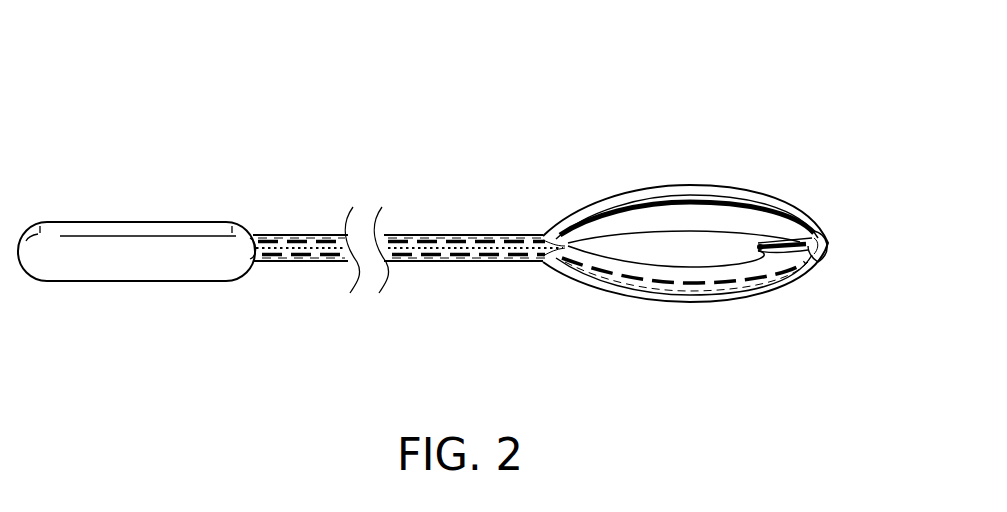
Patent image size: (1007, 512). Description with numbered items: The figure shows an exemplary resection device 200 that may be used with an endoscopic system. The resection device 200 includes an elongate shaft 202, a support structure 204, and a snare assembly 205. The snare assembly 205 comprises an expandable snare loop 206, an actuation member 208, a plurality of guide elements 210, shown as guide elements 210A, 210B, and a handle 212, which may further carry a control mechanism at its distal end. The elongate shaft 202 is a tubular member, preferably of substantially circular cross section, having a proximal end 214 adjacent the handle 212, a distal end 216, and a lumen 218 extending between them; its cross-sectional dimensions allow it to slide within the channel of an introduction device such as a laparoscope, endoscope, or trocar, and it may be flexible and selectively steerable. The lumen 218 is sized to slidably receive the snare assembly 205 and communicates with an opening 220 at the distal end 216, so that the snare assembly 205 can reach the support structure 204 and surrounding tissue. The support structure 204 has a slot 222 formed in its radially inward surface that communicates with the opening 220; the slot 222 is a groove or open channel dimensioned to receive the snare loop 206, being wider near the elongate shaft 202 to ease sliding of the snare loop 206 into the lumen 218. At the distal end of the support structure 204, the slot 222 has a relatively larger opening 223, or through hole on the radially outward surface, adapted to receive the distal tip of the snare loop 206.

The resection device 200 is at (84, 59).
The elongate shaft 202 is at (283, 263).
The support structure 204 is at (690, 303).
The snare assembly 205 is at (518, 139).
The expandable snare loop 206 is at (632, 232).
The actuation member 208 is at (473, 256).
The guide elements 210 is at (781, 262).
The guide element 210A is at (777, 240).
The guide element 210B is at (763, 253).
The handle 212 is at (139, 282).
The proximal end 214 is at (257, 263).
The distal end 216 is at (539, 265).
The lumen 218 is at (494, 237).
The opening 220 is at (541, 236).
The slot 222 is at (712, 200).
The opening 223 is at (818, 232).